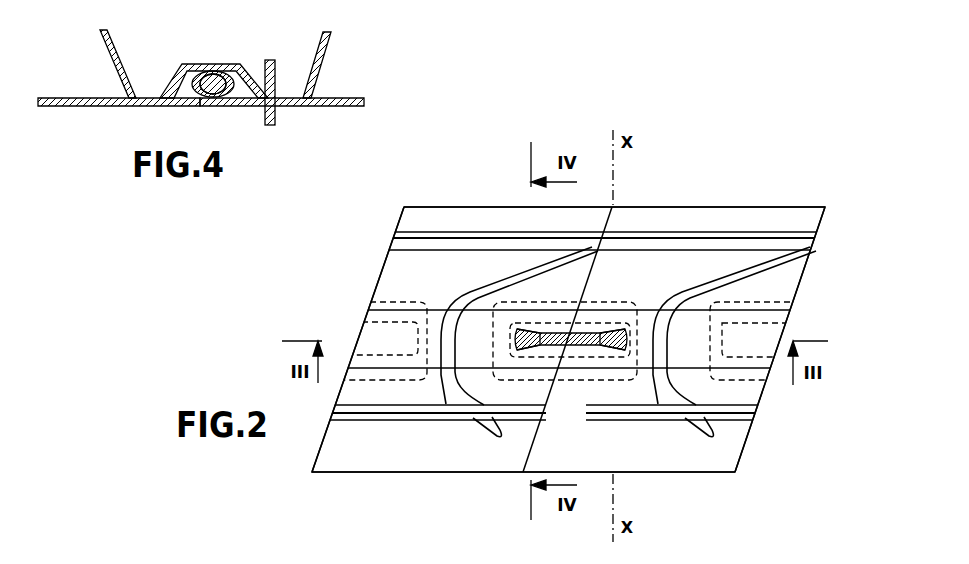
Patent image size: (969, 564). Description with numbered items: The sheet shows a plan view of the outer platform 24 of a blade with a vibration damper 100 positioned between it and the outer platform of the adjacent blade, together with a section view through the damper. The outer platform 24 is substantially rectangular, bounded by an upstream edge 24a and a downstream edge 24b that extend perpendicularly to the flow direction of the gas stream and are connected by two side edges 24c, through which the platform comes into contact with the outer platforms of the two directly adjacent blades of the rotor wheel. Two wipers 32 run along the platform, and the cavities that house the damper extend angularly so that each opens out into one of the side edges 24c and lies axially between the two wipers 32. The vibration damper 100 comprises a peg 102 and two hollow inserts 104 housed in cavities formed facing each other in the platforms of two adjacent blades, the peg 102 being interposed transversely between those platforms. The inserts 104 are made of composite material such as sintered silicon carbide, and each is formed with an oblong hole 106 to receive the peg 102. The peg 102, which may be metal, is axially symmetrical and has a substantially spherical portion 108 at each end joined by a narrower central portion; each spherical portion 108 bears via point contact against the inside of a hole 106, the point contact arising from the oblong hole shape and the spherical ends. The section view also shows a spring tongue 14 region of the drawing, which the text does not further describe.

In FIG. 2, the spring tongue 14 is at (447, 393).
In FIG. 4, the outer platform 24 is at (228, 80).
In FIG. 2, the outer platform 24 is at (470, 206).
In FIG. 4, the upstream edge 24a is at (39, 107).
In FIG. 2, the upstream edge 24a is at (697, 473).
In FIG. 4, the downstream edge 24b is at (366, 103).
In FIG. 2, the downstream edge 24b is at (750, 206).
In FIG. 2, the side edges 24c is at (378, 282).
In FIG. 4, the wipers 32 is at (100, 48).
In FIG. 2, the wipers 32 is at (423, 232).
In FIG. 2, the vibration damper 100 is at (635, 383).
In FIG. 4, the peg 102 is at (211, 75).
In FIG. 2, the peg 102 is at (586, 330).
In FIG. 4, the hollow inserts 104 is at (180, 68).
In FIG. 4, the holes 106 is at (233, 79).
In FIG. 2, the spherical portions 108 is at (518, 330).